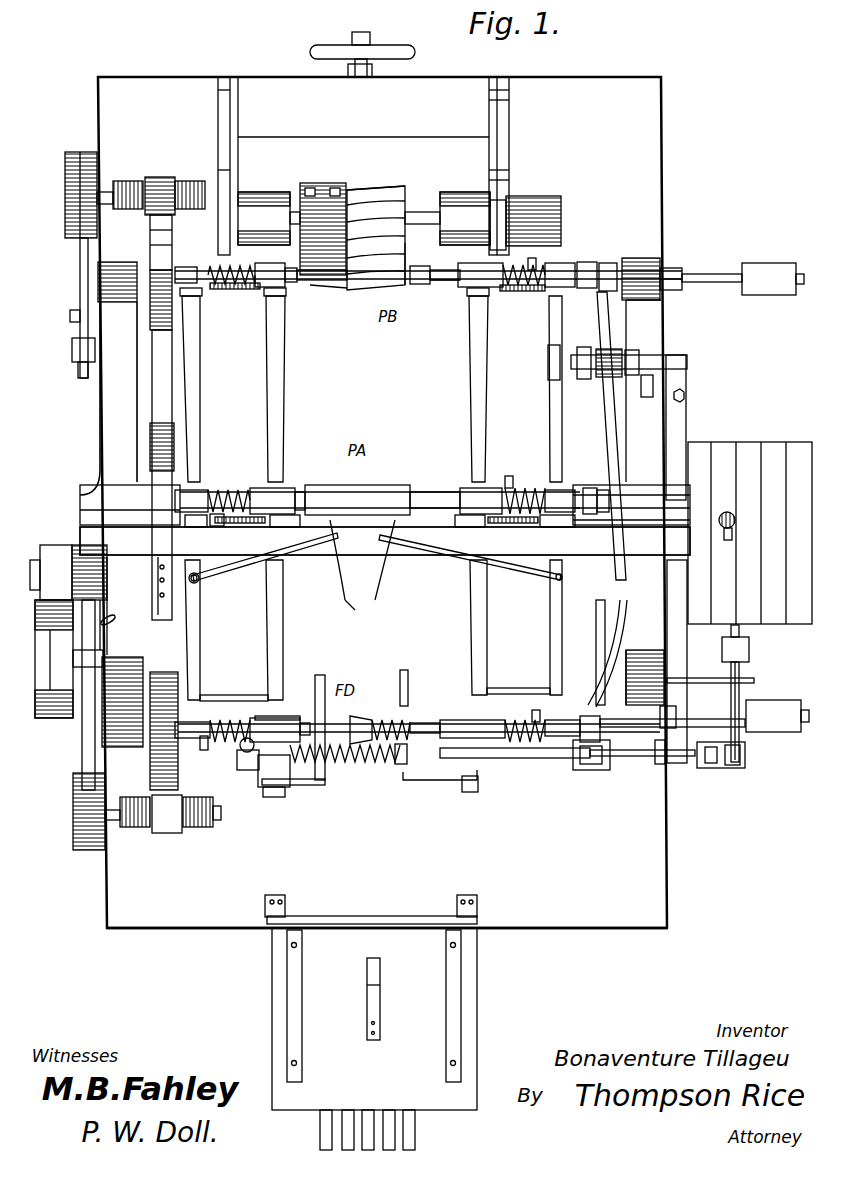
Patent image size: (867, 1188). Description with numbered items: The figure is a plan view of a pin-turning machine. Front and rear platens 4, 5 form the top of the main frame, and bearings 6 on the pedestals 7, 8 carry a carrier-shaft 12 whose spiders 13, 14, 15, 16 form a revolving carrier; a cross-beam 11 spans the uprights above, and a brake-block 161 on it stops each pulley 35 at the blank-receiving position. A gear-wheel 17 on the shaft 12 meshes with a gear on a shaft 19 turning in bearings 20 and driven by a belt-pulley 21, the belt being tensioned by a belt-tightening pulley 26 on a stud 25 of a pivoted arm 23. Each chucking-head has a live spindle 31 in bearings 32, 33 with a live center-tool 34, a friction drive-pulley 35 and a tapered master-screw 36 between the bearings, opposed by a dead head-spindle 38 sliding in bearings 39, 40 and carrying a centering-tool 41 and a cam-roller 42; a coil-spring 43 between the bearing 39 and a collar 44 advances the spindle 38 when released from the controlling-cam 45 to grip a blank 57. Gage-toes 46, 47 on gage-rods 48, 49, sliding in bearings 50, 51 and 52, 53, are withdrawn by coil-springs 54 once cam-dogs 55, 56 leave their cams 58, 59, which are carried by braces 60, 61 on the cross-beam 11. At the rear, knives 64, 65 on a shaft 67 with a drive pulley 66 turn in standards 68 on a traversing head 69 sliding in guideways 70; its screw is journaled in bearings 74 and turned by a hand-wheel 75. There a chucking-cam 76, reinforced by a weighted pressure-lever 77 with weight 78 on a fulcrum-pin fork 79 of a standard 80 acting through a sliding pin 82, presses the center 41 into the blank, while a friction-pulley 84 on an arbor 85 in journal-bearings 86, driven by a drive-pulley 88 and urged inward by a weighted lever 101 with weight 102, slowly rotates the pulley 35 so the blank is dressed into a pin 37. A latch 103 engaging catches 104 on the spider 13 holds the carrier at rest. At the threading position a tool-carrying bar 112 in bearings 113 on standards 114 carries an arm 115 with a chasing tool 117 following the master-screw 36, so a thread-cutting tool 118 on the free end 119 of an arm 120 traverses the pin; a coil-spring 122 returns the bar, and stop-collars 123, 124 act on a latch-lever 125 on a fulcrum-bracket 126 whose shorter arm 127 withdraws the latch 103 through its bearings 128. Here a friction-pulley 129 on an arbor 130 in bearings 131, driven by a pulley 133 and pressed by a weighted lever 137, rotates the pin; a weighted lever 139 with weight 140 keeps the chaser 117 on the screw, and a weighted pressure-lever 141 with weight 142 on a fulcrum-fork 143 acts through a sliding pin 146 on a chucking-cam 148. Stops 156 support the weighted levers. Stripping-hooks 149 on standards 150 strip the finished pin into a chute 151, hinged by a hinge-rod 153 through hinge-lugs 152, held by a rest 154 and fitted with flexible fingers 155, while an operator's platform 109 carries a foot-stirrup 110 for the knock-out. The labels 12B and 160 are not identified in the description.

The front platen 4 is at (655, 906).
The rear platen 5 is at (650, 122).
The bearings 6 is at (385, 519).
The pedestal or base 7 is at (643, 391).
The pedestal or base 8 is at (108, 398).
The cross-beam 11 is at (362, 560).
The carrier-shaft 12 is at (452, 492).
The shaft end 12B is at (577, 378).
The spider 13 is at (562, 324).
The spider 14 is at (486, 356).
The spider 15 is at (283, 361).
The spider 16 is at (200, 370).
The gear-wheel 17 is at (162, 423).
The shaft 19 is at (32, 575).
The bearings 20 is at (89, 572).
The belt-pulley 21 is at (53, 571).
The arm 23 is at (114, 621).
The stud 25 is at (100, 660).
The belt-tightening pulley 26 is at (54, 659).
The live spindle 31 is at (148, 490).
The fixed bearing 32 is at (280, 287).
The fixed bearing 33 is at (183, 267).
The live center-tool 34 is at (300, 490).
The friction drive-pulley 35 is at (174, 455).
The master-screw 36 is at (215, 266).
The pin 37 is at (376, 286).
The dead head-spindle 38 is at (608, 263).
The fixed bearing 39 is at (548, 490).
The fixed bearing 40 is at (470, 263).
The centering-tool 41 is at (435, 270).
The cam-roller 42 is at (587, 288).
The coil-spring 43 is at (524, 490).
The collar 44 is at (522, 285).
The controlling-cam 45 is at (612, 628).
The gage-toe 46 is at (310, 285).
The gage-toe 47 is at (415, 284).
The gage-rod 48 is at (300, 282).
The gage-rod 49 is at (445, 281).
The bearing 50 is at (262, 298).
The bearing 51 is at (135, 275).
The bearing 52 is at (470, 298).
The bearing 53 is at (548, 298).
The coil-spring 54 is at (377, 295).
The cam-dog 55 is at (162, 330).
The cam-dog 56 is at (560, 263).
The blank 57 is at (357, 500).
The cam 58 is at (199, 583).
The cam 59 is at (545, 572).
The supporting-brace 60 is at (238, 565).
The supporting-brace 61 is at (495, 562).
The knife 64 is at (372, 192).
The knife 65 is at (318, 190).
The drive pulley 66 is at (556, 197).
The shaft 67 is at (405, 243).
The standards 68 is at (364, 218).
The traversing head 69 is at (399, 168).
The guideways 70 is at (218, 118).
The bearings 74 is at (358, 77).
The hand-wheel 75 is at (400, 48).
The chucking-cam 76 is at (609, 400).
The weighted pressure-lever 77 is at (712, 282).
The weight 78 is at (773, 279).
The fulcrum-pin fork 79 is at (676, 268).
The standard 80 is at (672, 268).
The sliding pin 82 is at (641, 258).
The friction-pulley 84 is at (160, 177).
The arbor 85 is at (105, 192).
The journal-bearings 86 is at (128, 181).
The drive-pulley 88 is at (81, 184).
The weighted lever 101 is at (80, 262).
The weight 102 is at (72, 350).
The latch 103 is at (652, 397).
The catch 104 is at (548, 364).
The operator's platform 109 is at (750, 533).
The foot-stirrup 110 is at (736, 522).
The tool-carrying bar 112 is at (485, 758).
The bearings 113 is at (268, 787).
The standards 114 is at (300, 785).
The arm 115 is at (245, 770).
The chasing tool 117 is at (270, 716).
The thread-cutting tool 118 is at (420, 733).
The free end 119 is at (420, 760).
The tool-carrying arm 120 is at (400, 776).
The coil-spring 122 is at (345, 762).
The stop-collar 123 is at (660, 764).
The stop-collar 124 is at (725, 768).
The latch-lever 125 is at (686, 426).
The fulcrum-bracket 126 is at (686, 396).
The shorter arm 127 is at (682, 360).
The bearings 128 is at (600, 356).
The friction-pulley 129 is at (165, 833).
The arbor 130 is at (222, 815).
The bearings 131 is at (132, 827).
The pulley 133 is at (80, 828).
The weighted lever 137 is at (82, 786).
The weighted lever 139 is at (733, 690).
The weight 140 is at (749, 647).
The weighted pressure-lever 141 is at (804, 724).
The weight 142 is at (773, 716).
The fulcrum-fork 143 is at (670, 706).
The sliding pin 146 is at (636, 652).
The chucking-cam 148 is at (640, 650).
The stripping-hooks 149 is at (402, 672).
The standards 150 is at (275, 797).
The chute 151 is at (448, 889).
The hinge-lugs 152 is at (286, 898).
The hinge-rod 153 is at (365, 916).
The support or rest 154 is at (380, 975).
The flexible fingers 155 is at (416, 1138).
The supporting pins or stops 156 is at (70, 316).
The link 160 is at (357, 600).
The brake-block 161 is at (172, 600).